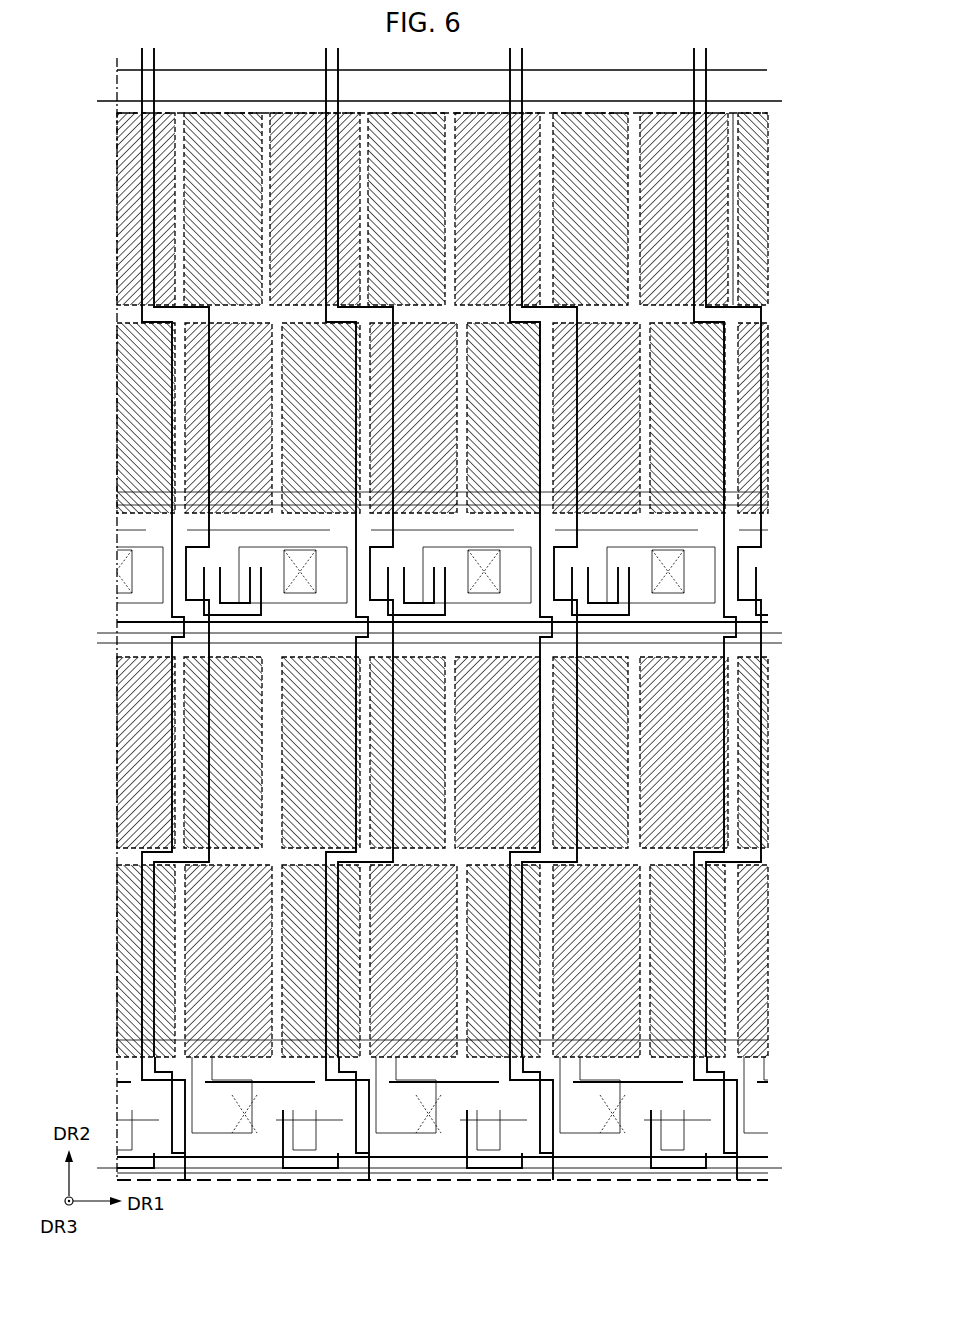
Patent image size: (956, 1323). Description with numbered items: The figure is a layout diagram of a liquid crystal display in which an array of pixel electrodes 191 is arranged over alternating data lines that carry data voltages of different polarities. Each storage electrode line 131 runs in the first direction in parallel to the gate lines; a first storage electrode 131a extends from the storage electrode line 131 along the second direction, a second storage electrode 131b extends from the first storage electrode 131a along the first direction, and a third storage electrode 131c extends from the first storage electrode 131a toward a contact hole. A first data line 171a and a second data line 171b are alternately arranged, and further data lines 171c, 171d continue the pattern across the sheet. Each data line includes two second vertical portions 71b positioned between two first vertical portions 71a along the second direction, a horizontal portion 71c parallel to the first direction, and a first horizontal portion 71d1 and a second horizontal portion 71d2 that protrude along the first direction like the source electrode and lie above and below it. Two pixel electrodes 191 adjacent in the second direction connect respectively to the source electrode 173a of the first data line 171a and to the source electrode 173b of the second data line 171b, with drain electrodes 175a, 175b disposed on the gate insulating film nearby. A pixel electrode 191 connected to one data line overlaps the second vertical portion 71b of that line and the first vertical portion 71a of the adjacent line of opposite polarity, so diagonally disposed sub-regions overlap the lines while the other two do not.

The pixel electrode 191 is at (484, 101).
The storage electrode line 131 is at (770, 115).
The first storage electrode 131a is at (600, 245).
The second storage electrode 131b is at (470, 505).
The third storage electrode 131c is at (535, 572).
The first data line 171a is at (144, 132).
The second data line 171b is at (328, 228).
The data line 171c is at (530, 150).
The data line 171d is at (697, 207).
The first vertical portion 71a is at (142, 176).
The second vertical portion 71b is at (192, 410).
The horizontal portion 71c is at (177, 324).
The first horizontal portion 71d1 is at (345, 500).
The second horizontal portion 71d2 is at (370, 666).
The source electrode 173a is at (630, 620).
The drain electrode 175a is at (710, 540).
The source electrode 173b is at (700, 1110).
The drain electrode 175b is at (645, 1085).